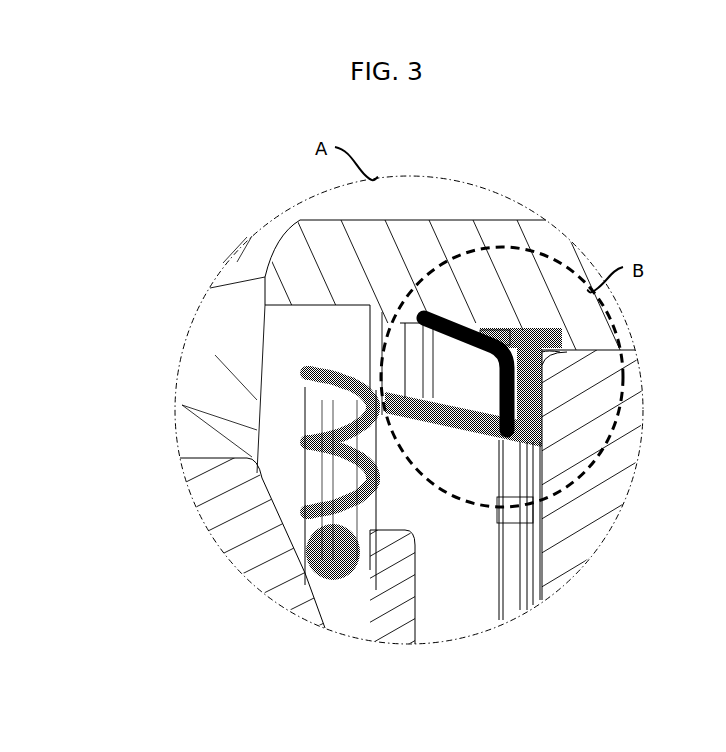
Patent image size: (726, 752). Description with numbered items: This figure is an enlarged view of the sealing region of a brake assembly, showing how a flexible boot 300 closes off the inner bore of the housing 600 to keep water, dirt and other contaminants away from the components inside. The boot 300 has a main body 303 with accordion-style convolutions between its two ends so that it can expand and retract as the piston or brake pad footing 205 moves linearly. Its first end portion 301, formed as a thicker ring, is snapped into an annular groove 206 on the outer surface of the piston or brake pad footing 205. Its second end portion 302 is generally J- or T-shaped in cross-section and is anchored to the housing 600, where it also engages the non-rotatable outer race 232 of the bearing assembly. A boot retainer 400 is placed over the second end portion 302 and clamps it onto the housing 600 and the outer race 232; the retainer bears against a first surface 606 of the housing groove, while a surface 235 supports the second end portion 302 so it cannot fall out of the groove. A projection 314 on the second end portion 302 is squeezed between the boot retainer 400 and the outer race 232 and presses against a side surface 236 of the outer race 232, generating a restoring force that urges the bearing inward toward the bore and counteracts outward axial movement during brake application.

The housing 600 is at (285, 268).
The projection 314 is at (385, 293).
The non-rotatable outer race 232 is at (600, 507).
The surface 235 is at (617, 352).
The second end portion 302 is at (565, 337).
The piston or brake pad footing 205 is at (240, 528).
The annular groove 206 is at (360, 540).
The flexible boot 300 is at (303, 464).
The main body 303 is at (308, 388).
The first end portion 301 is at (305, 575).
The boot retainer 400 is at (487, 358).
The first surface 606 is at (468, 323).
The side surface 236 is at (543, 438).